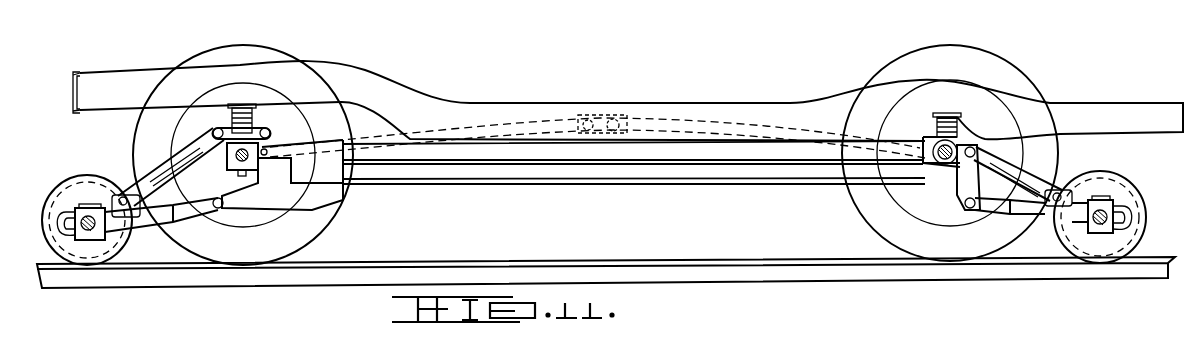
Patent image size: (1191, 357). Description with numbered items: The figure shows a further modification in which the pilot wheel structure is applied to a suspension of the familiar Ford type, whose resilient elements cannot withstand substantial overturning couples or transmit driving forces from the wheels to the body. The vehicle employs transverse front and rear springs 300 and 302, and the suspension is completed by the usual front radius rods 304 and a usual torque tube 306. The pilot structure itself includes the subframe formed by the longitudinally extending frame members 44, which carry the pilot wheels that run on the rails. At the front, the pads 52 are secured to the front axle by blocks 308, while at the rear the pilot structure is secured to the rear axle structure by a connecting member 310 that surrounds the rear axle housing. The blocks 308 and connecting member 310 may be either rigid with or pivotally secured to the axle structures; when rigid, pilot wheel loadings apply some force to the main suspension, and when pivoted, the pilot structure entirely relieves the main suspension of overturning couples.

The pad 52 is at (207, 108).
The transverse front spring 300 is at (270, 106).
The transverse rear spring 302 is at (954, 118).
The front radius rods 304 is at (403, 140).
The torque tube 306 is at (852, 140).
The blocks 308 is at (228, 178).
The connecting member 310 is at (913, 170).
The frame members 44 is at (617, 177).